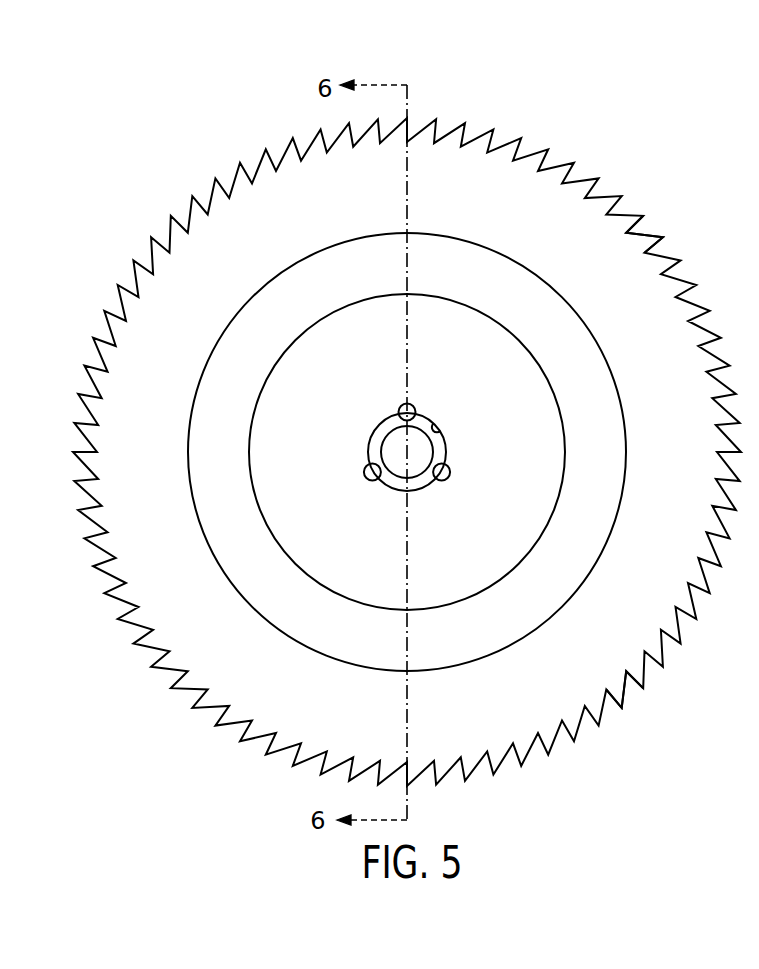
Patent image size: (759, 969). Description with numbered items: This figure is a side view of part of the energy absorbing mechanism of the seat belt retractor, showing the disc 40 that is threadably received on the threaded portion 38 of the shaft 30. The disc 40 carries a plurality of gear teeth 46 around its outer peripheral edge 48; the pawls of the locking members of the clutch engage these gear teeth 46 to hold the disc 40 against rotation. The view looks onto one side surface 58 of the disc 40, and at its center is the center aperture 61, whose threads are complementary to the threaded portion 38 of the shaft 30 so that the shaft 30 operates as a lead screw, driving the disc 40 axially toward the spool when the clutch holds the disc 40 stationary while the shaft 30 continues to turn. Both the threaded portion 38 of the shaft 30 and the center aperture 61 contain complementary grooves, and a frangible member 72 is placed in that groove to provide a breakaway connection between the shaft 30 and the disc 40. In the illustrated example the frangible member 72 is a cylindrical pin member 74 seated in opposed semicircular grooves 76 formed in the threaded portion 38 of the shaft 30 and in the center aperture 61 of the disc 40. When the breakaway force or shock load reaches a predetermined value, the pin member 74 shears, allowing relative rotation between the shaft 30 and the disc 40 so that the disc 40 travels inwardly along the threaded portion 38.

The disc 40 is at (415, 410).
The gear teeth 46 is at (618, 193).
The outer peripheral edge 48 is at (655, 248).
The side surface 58 is at (610, 642).
The shaft 30 is at (418, 467).
The threaded portion 38 is at (397, 483).
The center aperture 61 is at (443, 437).
The frangible member 72 is at (402, 405).
The cylindrical/pin member 74 is at (397, 410).
The semicircular grooves 76 is at (417, 409).